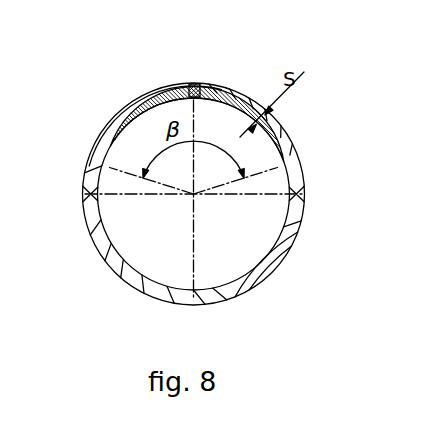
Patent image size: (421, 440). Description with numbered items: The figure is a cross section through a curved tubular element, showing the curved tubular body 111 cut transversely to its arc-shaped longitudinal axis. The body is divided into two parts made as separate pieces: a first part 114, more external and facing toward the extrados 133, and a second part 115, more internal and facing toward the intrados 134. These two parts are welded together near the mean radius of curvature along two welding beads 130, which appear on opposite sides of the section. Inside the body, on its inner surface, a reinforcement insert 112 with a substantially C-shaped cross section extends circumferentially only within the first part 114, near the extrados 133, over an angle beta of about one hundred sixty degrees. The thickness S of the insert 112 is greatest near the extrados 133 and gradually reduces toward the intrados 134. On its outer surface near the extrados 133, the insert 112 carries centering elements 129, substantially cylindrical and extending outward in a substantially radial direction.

The curved tubular body 111 is at (272, 277).
The reinforcement insert 112 is at (148, 106).
The first part 114 is at (92, 152).
The second part 115 is at (103, 248).
The centering element 129 is at (205, 84).
The welding bead 130 is at (84, 196).
The extrados 133 is at (194, 83).
The intrados 134 is at (193, 303).